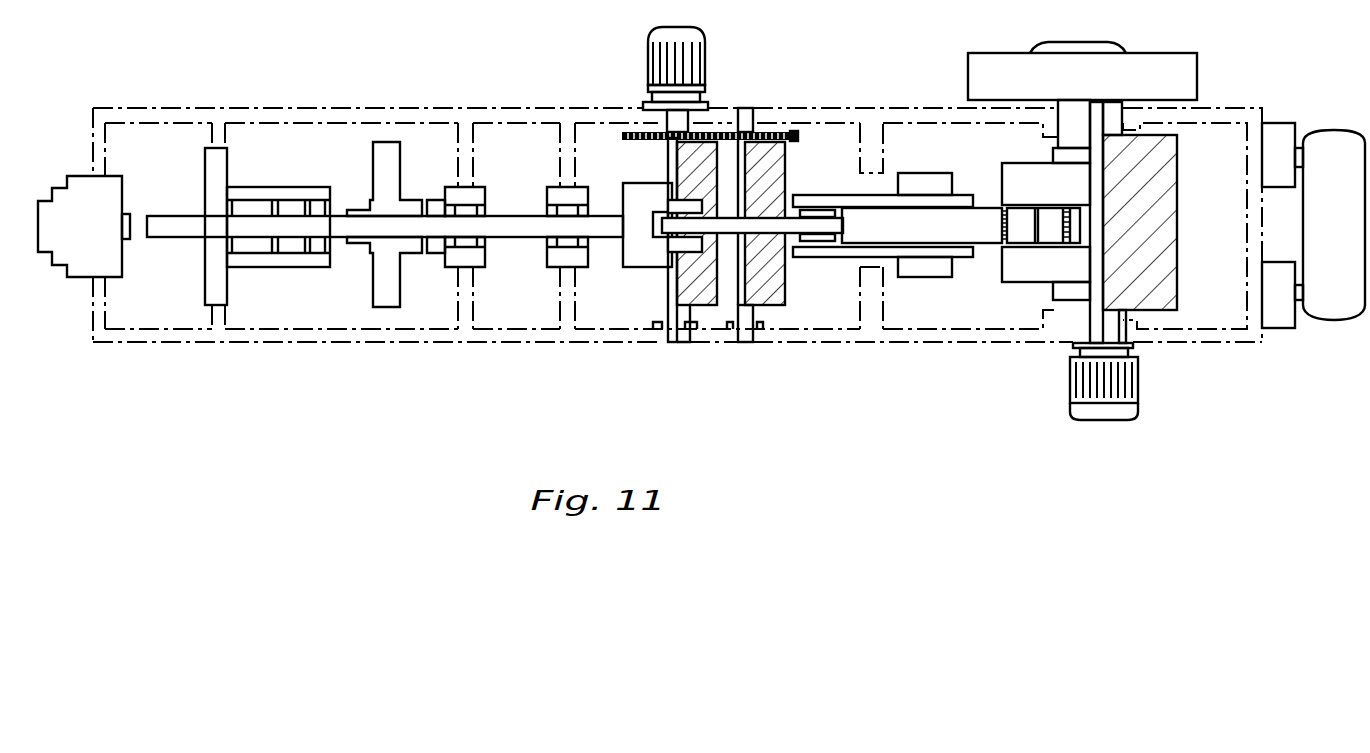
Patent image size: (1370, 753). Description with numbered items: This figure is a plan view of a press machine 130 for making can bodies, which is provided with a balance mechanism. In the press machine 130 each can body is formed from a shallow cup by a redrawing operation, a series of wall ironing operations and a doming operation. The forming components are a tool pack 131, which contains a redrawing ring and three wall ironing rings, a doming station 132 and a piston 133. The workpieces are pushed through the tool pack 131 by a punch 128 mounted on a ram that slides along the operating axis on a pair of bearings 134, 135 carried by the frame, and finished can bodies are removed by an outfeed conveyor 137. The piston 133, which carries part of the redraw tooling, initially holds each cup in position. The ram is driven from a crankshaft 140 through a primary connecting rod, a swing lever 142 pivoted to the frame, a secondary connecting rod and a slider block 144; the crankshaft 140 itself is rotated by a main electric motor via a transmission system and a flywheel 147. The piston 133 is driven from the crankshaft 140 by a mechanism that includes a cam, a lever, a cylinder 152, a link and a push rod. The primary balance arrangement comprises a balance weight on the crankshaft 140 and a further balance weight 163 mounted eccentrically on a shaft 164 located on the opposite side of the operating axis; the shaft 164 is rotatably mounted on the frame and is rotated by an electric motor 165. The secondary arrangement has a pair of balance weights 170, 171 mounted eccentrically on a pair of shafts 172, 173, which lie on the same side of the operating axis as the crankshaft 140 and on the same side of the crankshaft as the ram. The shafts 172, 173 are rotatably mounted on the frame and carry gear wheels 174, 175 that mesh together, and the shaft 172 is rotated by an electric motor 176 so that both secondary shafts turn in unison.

The punch 128 is at (170, 225).
The press machine 130 is at (118, 358).
The tool pack 131 is at (290, 262).
The doming station 132 is at (75, 263).
The piston 133 is at (382, 274).
The bearing 134 is at (462, 256).
The bearing 135 is at (560, 255).
The outfeed conveyor 137 is at (212, 172).
The crankshaft 140 is at (1060, 298).
The swing lever 142 is at (940, 227).
The slider block 144 is at (645, 258).
The flywheel 147 is at (986, 75).
The cylinder 152 is at (1323, 300).
The balance weight 163 is at (1155, 241).
The shaft 164 is at (1093, 328).
The electric motor 165 is at (1118, 383).
The balance weight 170 is at (707, 307).
The balance weight 171 is at (786, 298).
The shaft 172 is at (672, 163).
The shaft 173 is at (750, 125).
The gear wheel 174 is at (797, 136).
The gear wheel 175 is at (622, 134).
The electric motor 176 is at (660, 64).